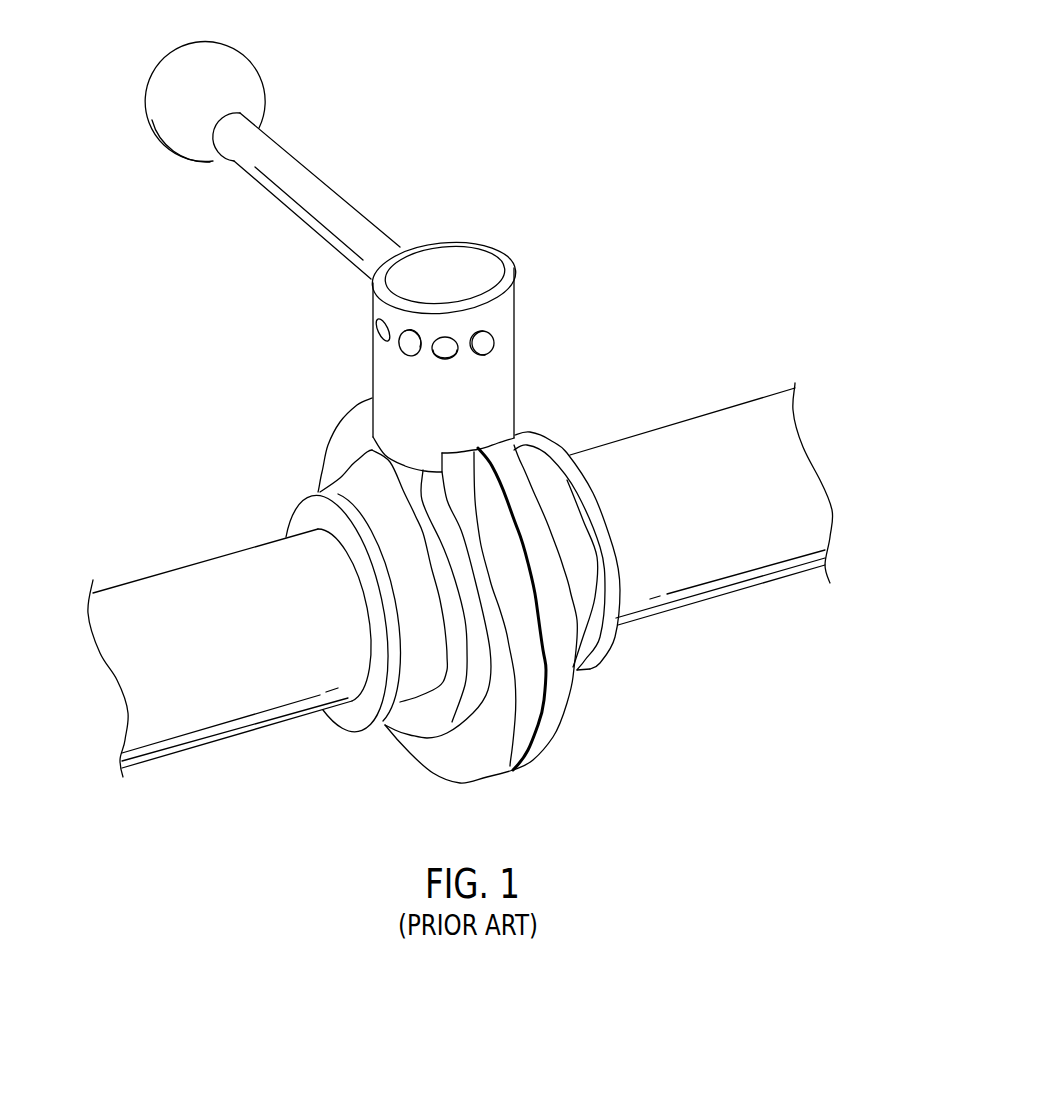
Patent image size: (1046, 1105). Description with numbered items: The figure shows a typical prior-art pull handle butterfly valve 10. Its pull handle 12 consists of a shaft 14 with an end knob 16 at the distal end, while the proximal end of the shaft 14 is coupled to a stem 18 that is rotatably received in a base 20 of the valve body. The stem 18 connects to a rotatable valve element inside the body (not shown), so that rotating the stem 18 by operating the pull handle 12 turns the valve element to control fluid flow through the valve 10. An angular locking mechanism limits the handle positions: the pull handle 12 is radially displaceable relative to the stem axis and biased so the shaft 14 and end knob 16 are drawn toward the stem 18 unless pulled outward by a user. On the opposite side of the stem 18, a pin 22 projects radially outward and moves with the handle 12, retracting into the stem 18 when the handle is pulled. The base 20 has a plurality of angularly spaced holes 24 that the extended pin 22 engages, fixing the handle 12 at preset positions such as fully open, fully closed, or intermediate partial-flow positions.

The pull handle butterfly valve 10 is at (735, 149).
The pull handle 12 is at (341, 238).
The shaft 14 is at (278, 213).
The end knob 16 is at (124, 120).
The stem 18 is at (468, 258).
The base 20 is at (455, 345).
The pin 22 is at (483, 347).
The holes 24 is at (402, 350).